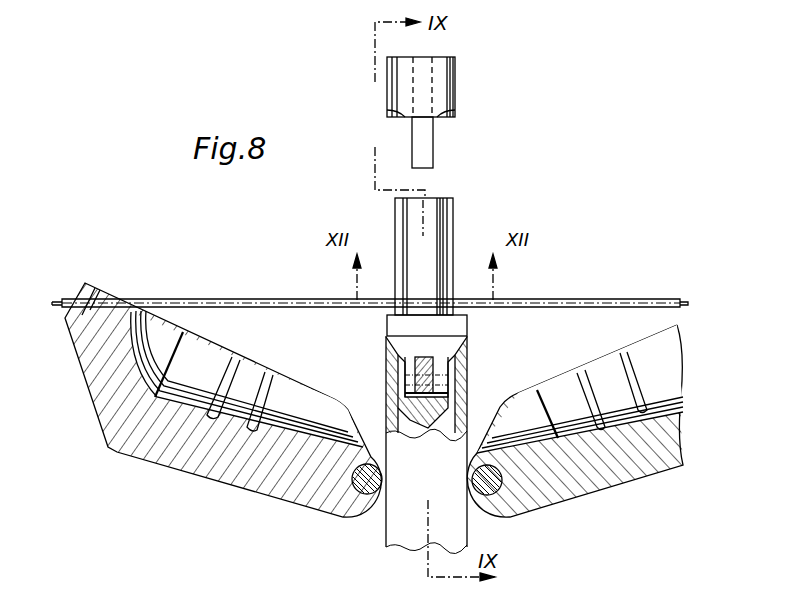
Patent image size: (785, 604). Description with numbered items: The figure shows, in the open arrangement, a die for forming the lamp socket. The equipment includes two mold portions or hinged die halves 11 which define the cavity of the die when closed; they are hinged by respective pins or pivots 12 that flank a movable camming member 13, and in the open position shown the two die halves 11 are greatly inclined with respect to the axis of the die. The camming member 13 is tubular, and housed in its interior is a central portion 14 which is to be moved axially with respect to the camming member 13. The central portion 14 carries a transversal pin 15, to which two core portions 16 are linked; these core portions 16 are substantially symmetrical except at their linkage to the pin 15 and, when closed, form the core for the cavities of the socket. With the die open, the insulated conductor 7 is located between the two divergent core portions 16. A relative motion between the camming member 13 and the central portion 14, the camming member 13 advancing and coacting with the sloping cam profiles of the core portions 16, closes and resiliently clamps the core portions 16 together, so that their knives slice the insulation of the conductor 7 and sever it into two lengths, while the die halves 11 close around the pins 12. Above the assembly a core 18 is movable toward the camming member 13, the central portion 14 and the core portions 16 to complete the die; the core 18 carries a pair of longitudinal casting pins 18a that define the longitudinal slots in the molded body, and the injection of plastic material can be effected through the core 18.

The insulated conductor 7 is at (222, 302).
The hinged die halves 11 is at (228, 482).
The pins or pivots 12 is at (340, 517).
The movable camming member 13 is at (386, 350).
The central portion 14 is at (440, 412).
The transversal pin 15 is at (405, 383).
The core portions 16 is at (453, 213).
The core 18 is at (447, 82).
The longitudinal casting pins 18a is at (427, 148).